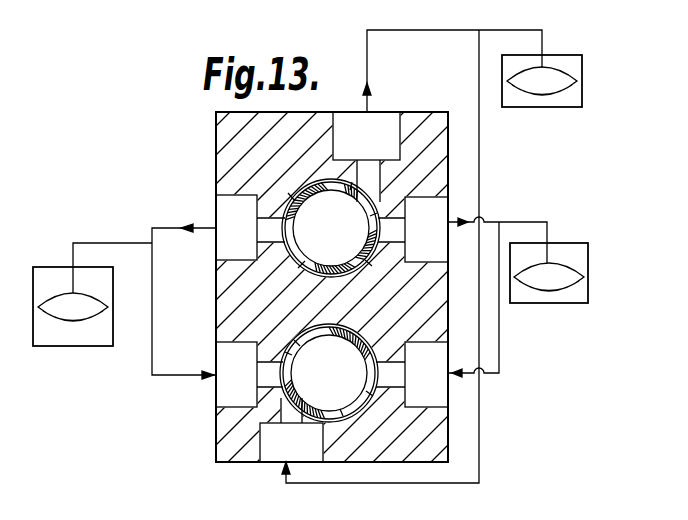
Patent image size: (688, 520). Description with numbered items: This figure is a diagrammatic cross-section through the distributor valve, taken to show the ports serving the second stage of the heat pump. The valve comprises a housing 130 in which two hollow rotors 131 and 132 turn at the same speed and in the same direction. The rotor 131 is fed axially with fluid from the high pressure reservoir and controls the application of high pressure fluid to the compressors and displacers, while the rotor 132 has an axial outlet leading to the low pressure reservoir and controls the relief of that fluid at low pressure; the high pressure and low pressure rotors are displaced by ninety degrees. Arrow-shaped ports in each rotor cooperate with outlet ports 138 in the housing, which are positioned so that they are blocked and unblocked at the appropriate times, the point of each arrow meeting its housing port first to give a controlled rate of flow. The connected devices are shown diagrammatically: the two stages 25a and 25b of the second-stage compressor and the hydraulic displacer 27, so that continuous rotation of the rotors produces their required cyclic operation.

The housing 130 is at (250, 143).
The rotor 131 is at (290, 205).
The rotor 132 is at (283, 392).
The outlet ports 138 is at (390, 227).
The hydraulic displacer 27 is at (547, 105).
The first stage of compressor 25a is at (45, 270).
The second stage of compressor 25b is at (562, 250).